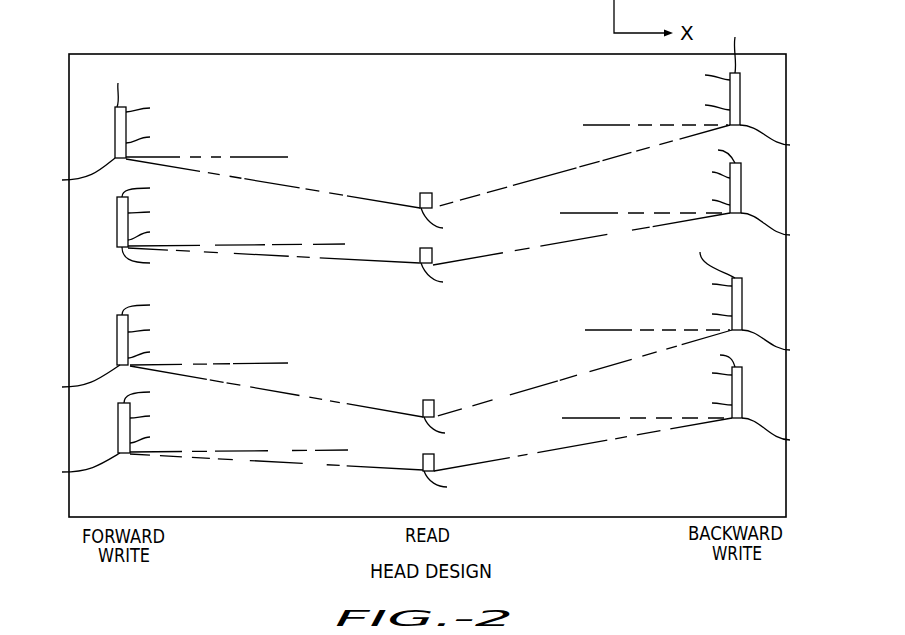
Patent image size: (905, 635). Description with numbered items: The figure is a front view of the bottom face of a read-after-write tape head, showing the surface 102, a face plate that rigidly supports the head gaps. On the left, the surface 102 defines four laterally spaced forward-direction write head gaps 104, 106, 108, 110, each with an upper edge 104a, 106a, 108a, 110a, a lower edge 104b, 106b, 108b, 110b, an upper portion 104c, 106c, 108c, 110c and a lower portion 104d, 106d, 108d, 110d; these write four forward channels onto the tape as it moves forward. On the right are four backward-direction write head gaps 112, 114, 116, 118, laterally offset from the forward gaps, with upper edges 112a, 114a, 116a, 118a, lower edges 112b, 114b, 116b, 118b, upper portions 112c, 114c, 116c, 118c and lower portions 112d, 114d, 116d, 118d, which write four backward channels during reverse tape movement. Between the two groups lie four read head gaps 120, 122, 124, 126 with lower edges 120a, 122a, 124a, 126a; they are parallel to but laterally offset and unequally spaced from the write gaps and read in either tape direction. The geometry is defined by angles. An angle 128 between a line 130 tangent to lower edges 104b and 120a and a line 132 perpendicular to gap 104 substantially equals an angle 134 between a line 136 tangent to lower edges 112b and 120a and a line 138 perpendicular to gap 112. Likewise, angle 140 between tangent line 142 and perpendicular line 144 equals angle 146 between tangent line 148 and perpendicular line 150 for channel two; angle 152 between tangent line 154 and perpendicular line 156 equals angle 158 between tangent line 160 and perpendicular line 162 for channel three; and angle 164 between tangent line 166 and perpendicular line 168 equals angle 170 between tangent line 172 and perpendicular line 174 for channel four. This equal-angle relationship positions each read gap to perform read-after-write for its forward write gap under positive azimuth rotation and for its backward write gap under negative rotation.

The surface 102 is at (786, 54).
The first forward-direction write head gap 104 is at (115, 112).
The upper edge of first forward write head gap 104a is at (121, 83).
The lower edge of first forward write head gap 104b is at (66, 173).
The upper portion of first forward write head gap 104c is at (159, 109).
The lower portion of first forward write head gap 104d is at (159, 138).
The second forward-direction write head gap 106 is at (117, 203).
The upper edge of second forward write head gap 106a is at (157, 188).
The lower edge of second forward write head gap 106b is at (157, 261).
The upper portion of second forward write head gap 106c is at (160, 210).
The lower portion of second forward write head gap 106d is at (160, 234).
The third forward-direction write head gap 108 is at (117, 322).
The upper edge of third forward write head gap 108a is at (157, 306).
The lower edge of third forward write head gap 108b is at (69, 380).
The upper portion of third forward write head gap 108c is at (160, 329).
The lower portion of third forward write head gap 108d is at (160, 353).
The fourth forward-direction write head gap 110 is at (118, 408).
The upper edge of fourth forward write head gap 110a is at (158, 391).
The lower edge of fourth forward write head gap 110b is at (69, 467).
The upper portion of fourth forward write head gap 110c is at (161, 414).
The lower portion of fourth forward write head gap 110d is at (161, 437).
The first backward-direction write head gap 112 is at (740, 97).
The upper edge of first backward write head gap 112a is at (741, 43).
The lower edge of first backward write head gap 112b is at (788, 141).
The upper portion of first backward write head gap 112c is at (696, 74).
The lower portion of first backward write head gap 112d is at (696, 103).
The second backward-direction write head gap 114 is at (741, 185).
The upper edge of second backward write head gap 114a is at (705, 150).
The lower edge of second backward write head gap 114b is at (788, 230).
The upper portion of second backward write head gap 114c is at (701, 173).
The lower portion of second backward write head gap 114d is at (701, 199).
The third backward-direction write head gap 116 is at (742, 302).
The upper edge of third backward write head gap 116a is at (709, 253).
The lower edge of third backward write head gap 116b is at (789, 346).
The upper portion of third backward write head gap 116c is at (701, 284).
The lower portion of third backward write head gap 116d is at (701, 314).
The fourth backward-direction write head gap 118 is at (742, 390).
The upper edge of fourth backward write head gap 118a is at (709, 354).
The lower edge of fourth backward write head gap 118b is at (789, 435).
The upper portion of fourth backward write head gap 118c is at (700, 373).
The lower portion of fourth backward write head gap 118d is at (700, 403).
The first read head gap 120 is at (421, 193).
The lower edge of first read head gap 120a is at (453, 224).
The second read head gap 122 is at (421, 248).
The lower edge of second read head gap 122a is at (453, 278).
The third read head gap 124 is at (424, 400).
The lower edge of third read head gap 124a is at (455, 431).
The fourth read head gap 126 is at (424, 454).
The lower edge of fourth read head gap 126a is at (456, 484).
The angle 128 is at (230, 222).
The line tangent to lower edges 104b and 120a 130 is at (276, 186).
The line perpendicular to gap 104 132 is at (240, 120).
The angle 134 is at (662, 200).
The line tangent to lower edges 112b and 120a 136 is at (605, 173).
The line perpendicular to gap 112 138 is at (633, 78).
The angle 140 is at (339, 270).
The line tangent to lower edges 106b and 122a 142 is at (265, 258).
The line perpendicular to gap 106 144 is at (338, 238).
The angle 146 is at (623, 270).
The line tangent to lower edges 114b and 122a 148 is at (547, 247).
The line perpendicular to gap 114 150 is at (568, 215).
The angle 152 is at (233, 427).
The line tangent to lower edges 108b and 124a 154 is at (343, 442).
The line perpendicular to gap 108 156 is at (243, 322).
The angle 158 is at (667, 410).
The line tangent to lower edges 116b and 124a 160 is at (537, 388).
The line perpendicular to gap 116 162 is at (636, 285).
The angle 164 is at (340, 478).
The line tangent to lower edges 110b and 126a 166 is at (397, 471).
The line perpendicular to gap 110 168 is at (281, 451).
The angle 170 is at (614, 450).
The line tangent to lower edges 118b and 126a 172 is at (550, 452).
The line perpendicular to gap 118 174 is at (609, 375).